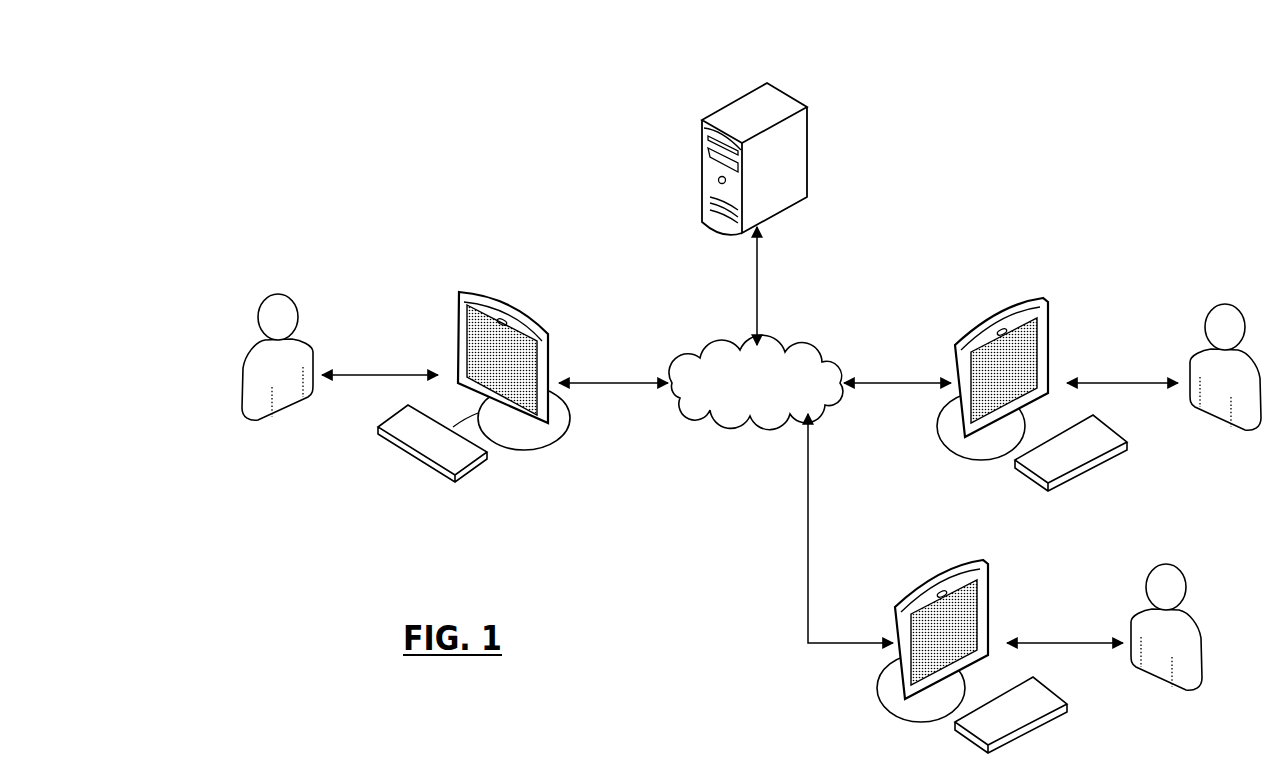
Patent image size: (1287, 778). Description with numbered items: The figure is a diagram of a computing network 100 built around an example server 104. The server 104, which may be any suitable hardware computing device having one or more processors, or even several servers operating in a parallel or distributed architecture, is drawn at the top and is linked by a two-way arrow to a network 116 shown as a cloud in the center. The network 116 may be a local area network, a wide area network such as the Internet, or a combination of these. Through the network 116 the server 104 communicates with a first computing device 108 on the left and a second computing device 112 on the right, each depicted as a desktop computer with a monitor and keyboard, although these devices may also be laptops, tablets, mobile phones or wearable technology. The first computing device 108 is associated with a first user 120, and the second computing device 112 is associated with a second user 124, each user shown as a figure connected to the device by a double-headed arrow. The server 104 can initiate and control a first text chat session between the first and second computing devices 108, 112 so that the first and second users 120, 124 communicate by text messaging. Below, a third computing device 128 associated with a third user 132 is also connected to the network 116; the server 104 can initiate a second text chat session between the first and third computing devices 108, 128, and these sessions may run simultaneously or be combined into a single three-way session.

The computing network 100 is at (336, 56).
The server 104 is at (733, 104).
The first computing device 108 is at (505, 300).
The second computing device 112 is at (1003, 305).
The network 116 is at (705, 416).
The first user 120 is at (278, 293).
The second user 124 is at (1225, 303).
The third computing device 128 is at (943, 568).
The third user 132 is at (1166, 563).